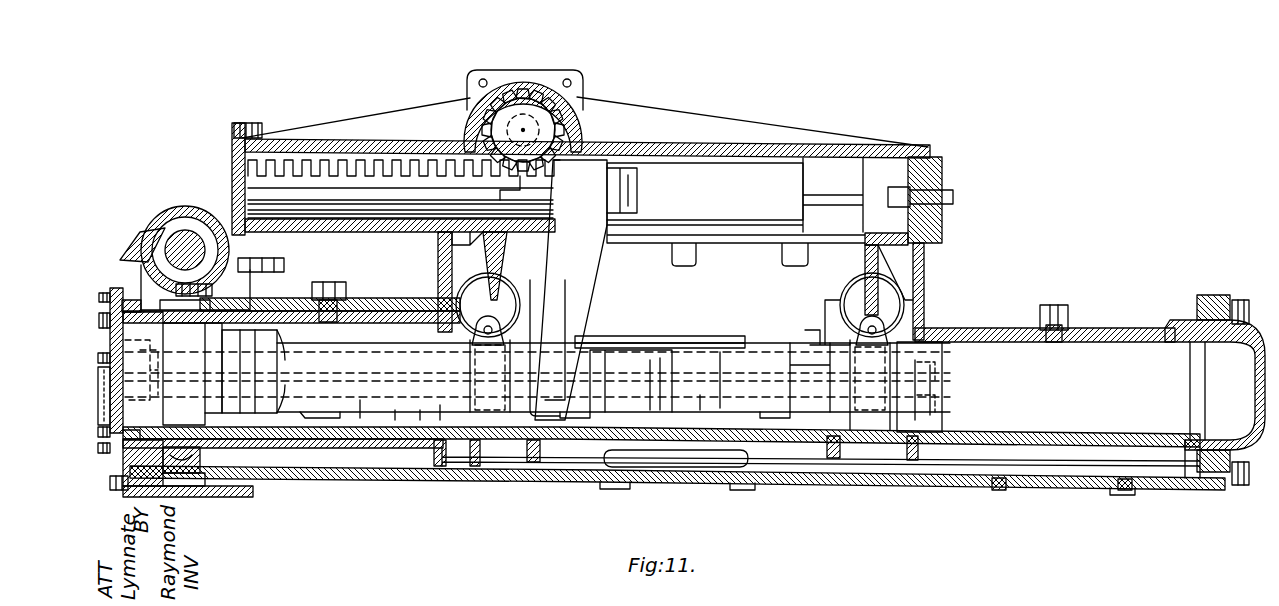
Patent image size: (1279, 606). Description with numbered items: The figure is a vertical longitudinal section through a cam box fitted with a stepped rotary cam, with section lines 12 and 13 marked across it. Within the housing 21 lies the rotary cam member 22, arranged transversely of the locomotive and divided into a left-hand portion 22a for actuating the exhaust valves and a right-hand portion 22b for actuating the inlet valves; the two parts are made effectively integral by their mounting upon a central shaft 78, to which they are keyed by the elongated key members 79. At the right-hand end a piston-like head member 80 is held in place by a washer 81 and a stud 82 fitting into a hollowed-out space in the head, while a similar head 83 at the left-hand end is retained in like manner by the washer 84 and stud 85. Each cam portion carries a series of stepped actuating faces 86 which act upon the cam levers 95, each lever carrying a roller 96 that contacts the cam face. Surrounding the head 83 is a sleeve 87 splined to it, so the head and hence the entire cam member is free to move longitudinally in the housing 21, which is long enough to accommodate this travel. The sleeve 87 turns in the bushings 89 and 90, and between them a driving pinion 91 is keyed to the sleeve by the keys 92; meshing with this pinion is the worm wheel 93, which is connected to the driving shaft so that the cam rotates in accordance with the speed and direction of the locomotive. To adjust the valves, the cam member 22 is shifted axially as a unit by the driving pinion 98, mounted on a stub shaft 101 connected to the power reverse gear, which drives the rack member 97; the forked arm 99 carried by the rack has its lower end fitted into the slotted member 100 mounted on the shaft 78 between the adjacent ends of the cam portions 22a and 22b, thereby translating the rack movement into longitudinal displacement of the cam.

The section line 12 is at (527, 65).
The section line 13 is at (205, 183).
The housing 21 is at (870, 483).
The rotary cam 22 is at (720, 355).
The left-hand portion of cam member 22a is at (358, 415).
The right-hand portion of cam member 22b is at (790, 440).
The central shaft 78 is at (680, 362).
The elongated key members 79 is at (752, 380).
The piston-like head member 80 is at (925, 345).
The washer 81 is at (935, 360).
The stud 82 is at (930, 412).
The head 83 is at (190, 460).
The washer 84 is at (165, 374).
The stud 85 is at (196, 372).
The stepped actuating faces 86 is at (270, 330).
The sleeve 87 is at (355, 320).
The bushing 89 is at (405, 318).
The bushing 90 is at (147, 300).
The driving pinion 91 is at (200, 410).
The keys 92 is at (212, 296).
The worm wheel 93 is at (176, 240).
The cam levers 95 is at (495, 330).
The roller 96 is at (490, 412).
The rack member 97 is at (330, 170).
The driving pinion 98 is at (540, 110).
The forked arm 99 is at (575, 270).
The slotted member 100 is at (572, 345).
The stub shaft 101 is at (545, 128).